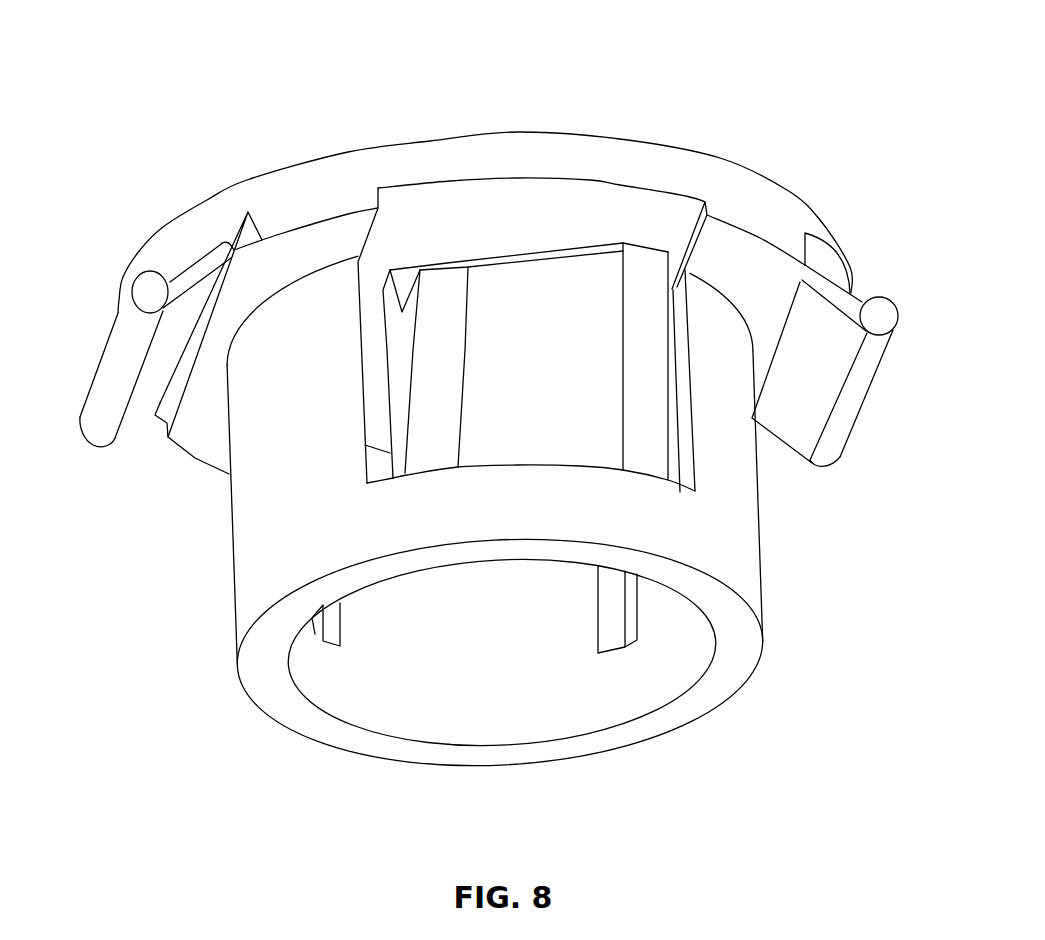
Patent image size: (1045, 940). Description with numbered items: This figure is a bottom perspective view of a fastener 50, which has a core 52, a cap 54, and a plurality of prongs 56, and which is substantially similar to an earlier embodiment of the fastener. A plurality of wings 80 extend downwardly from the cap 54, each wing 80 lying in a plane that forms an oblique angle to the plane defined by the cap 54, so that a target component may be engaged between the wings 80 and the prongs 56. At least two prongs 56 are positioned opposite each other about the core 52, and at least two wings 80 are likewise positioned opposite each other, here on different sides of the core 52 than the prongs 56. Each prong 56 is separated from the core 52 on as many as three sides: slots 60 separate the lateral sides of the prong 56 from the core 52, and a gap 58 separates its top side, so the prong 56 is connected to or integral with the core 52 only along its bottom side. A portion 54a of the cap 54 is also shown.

The fastener 50 is at (118, 68).
The core 52 is at (245, 520).
The cap 54 is at (447, 143).
The flange segment 54a is at (477, 208).
The prong 56 is at (553, 370).
The gap 58 is at (548, 228).
The slot 60 is at (356, 375).
The wing 80 is at (107, 383).